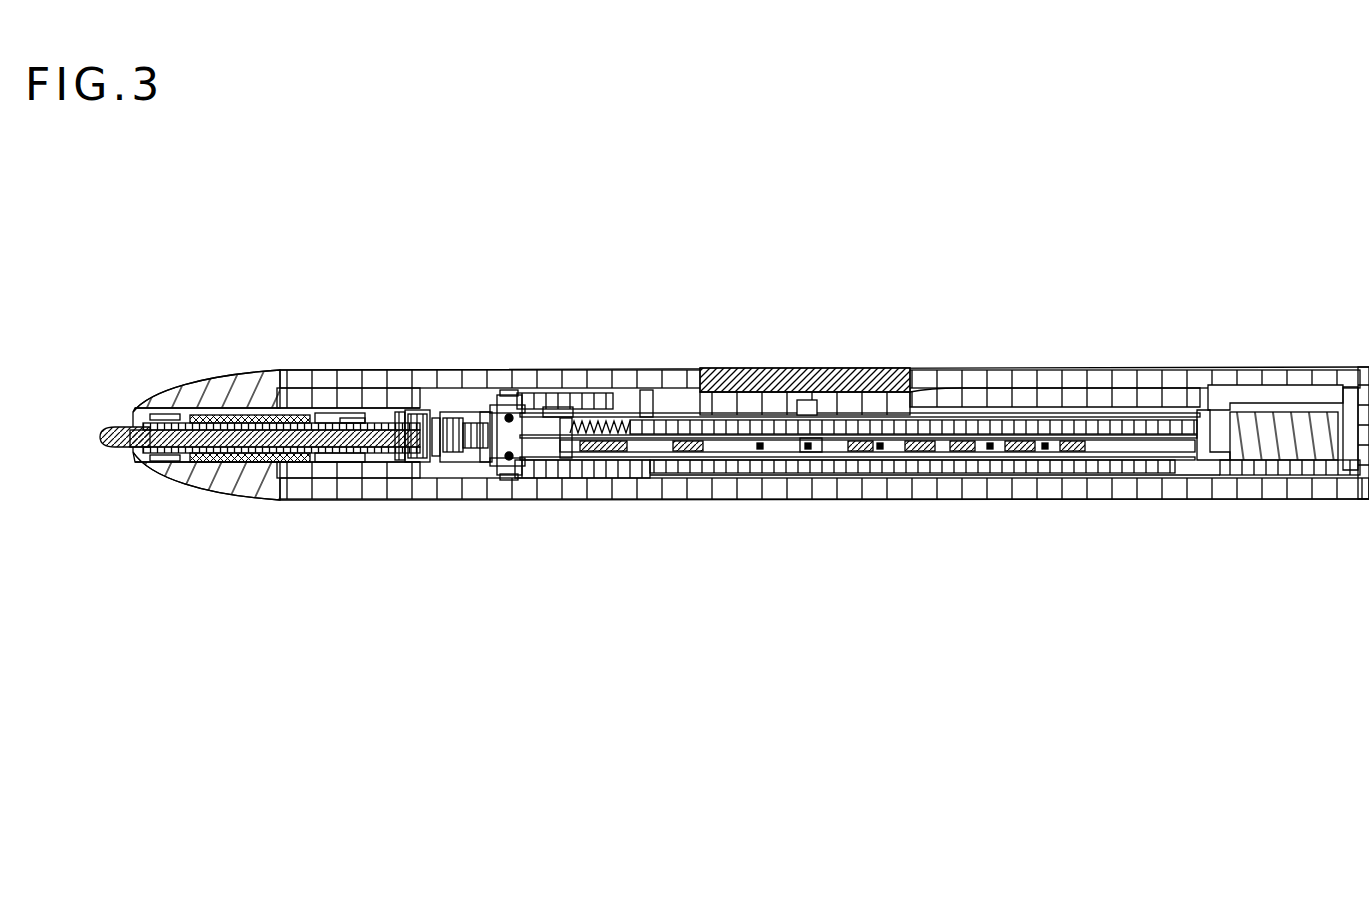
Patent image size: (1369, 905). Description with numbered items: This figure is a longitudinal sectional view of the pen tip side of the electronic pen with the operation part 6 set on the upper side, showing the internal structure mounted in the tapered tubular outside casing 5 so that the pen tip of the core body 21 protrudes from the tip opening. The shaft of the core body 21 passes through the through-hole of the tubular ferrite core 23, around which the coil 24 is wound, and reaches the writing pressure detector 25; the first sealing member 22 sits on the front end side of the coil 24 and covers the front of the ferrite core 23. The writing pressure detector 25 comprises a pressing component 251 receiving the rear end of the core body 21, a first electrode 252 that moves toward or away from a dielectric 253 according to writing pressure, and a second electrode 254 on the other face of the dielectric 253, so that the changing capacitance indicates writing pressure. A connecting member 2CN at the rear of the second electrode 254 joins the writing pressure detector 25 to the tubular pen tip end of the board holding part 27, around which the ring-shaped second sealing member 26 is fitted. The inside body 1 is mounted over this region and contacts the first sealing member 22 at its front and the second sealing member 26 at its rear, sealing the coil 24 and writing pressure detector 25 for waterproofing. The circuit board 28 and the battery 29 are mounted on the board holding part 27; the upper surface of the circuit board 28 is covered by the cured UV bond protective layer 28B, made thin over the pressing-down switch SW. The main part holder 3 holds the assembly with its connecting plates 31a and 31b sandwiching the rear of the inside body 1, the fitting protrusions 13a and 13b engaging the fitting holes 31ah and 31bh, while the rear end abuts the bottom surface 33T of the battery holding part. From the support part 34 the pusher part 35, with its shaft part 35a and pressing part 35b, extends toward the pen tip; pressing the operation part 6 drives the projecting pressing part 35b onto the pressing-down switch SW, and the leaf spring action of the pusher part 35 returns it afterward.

The inside body 1 is at (262, 370).
The core body 21 is at (124, 448).
The first sealing member 22 is at (178, 468).
The ferrite core 23 is at (316, 468).
The coil 24 is at (240, 470).
The writing pressure detector 25 is at (429, 521).
The pressing component 251 is at (397, 465).
The first electrode 252 is at (417, 470).
The dielectric 253 is at (436, 470).
The second electrode 254 is at (465, 481).
The second sealing member 26 is at (513, 418).
The connecting member 2CN is at (470, 412).
The fitting protrusion 13a is at (508, 414).
The fitting protrusion 13b is at (508, 462).
The fitting hole 31ah is at (505, 395).
The fitting hole 31bh is at (505, 478).
The connecting plate 31a is at (585, 395).
The connecting plate 31b is at (590, 478).
The board holding part 27 is at (560, 470).
The circuit board 28 is at (726, 475).
The protective layer 28B is at (643, 392).
The main part holder 3 is at (880, 478).
The pressing-down switch SW is at (806, 452).
The operation part 6 is at (771, 368).
The pusher part 35 is at (950, 340).
The shaft part 35a is at (1055, 358).
The pressing part 35b is at (888, 392).
The outside casing 5 is at (1140, 368).
The support part 34 is at (1205, 410).
The battery 29 is at (1262, 445).
The bottom surface 33T is at (1345, 388).